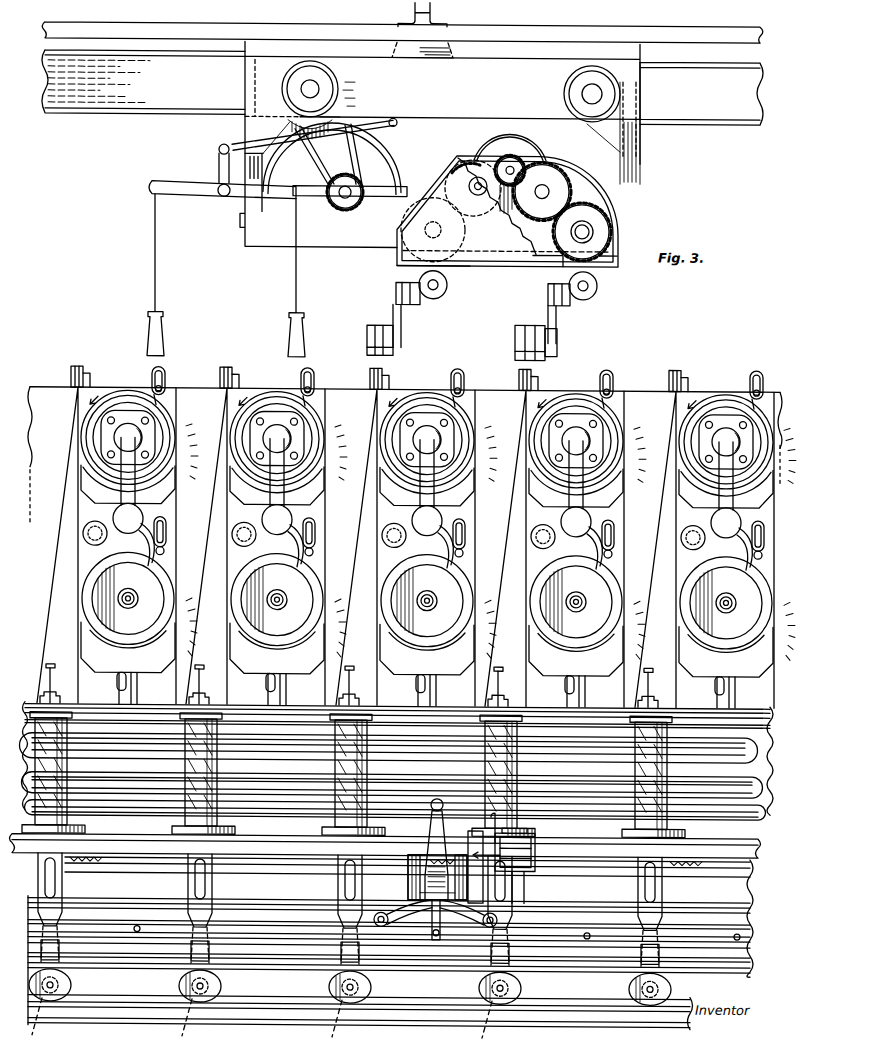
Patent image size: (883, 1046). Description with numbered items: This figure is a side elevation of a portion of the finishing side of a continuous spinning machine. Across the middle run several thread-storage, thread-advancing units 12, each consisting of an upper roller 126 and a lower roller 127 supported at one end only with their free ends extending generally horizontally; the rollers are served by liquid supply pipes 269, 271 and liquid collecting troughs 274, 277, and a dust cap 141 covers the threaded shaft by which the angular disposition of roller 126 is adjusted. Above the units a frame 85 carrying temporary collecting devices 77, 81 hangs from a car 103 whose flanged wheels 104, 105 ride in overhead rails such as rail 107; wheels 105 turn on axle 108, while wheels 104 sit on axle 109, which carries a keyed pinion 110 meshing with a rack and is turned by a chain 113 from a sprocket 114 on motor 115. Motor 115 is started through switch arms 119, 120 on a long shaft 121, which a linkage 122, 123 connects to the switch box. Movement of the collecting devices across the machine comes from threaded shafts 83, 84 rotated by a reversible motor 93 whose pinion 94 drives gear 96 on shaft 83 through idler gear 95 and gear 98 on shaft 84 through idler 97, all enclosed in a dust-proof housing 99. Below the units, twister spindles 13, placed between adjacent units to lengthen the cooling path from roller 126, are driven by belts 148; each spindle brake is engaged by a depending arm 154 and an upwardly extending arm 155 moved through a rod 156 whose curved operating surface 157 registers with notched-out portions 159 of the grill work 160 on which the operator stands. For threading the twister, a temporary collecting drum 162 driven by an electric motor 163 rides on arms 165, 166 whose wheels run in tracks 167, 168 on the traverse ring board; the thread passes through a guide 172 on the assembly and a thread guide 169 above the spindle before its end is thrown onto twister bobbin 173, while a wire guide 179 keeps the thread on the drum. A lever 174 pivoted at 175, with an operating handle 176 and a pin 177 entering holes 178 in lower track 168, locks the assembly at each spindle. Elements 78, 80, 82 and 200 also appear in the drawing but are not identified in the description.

The thread-storage, thread-advancing unit 12 is at (671, 447).
The twister spindle 13 is at (668, 706).
The temporary collecting device 77 is at (522, 320).
The bracket 78 is at (674, 368).
The roller 80 is at (597, 290).
The temporary collecting device 81 is at (372, 325).
The roller 82 is at (447, 286).
The threaded shaft 83 is at (583, 236).
The threaded shaft 84 is at (405, 233).
The frame 85 is at (392, 247).
The reversible motor 93 is at (533, 146).
The pinion 94 is at (503, 158).
The idler gear 95 is at (570, 178).
The gear 96 is at (598, 205).
The idler 97 is at (470, 165).
The gear 98 is at (440, 178).
The dust-proof housing 99 is at (500, 248).
The car 103 is at (646, 91).
The flanged wheels 104 is at (338, 87).
The flanged wheels 105 is at (566, 95).
The rail 107 is at (130, 108).
The axle 108 is at (595, 78).
The axle 109 is at (318, 82).
The pinion 110 is at (340, 40).
The chain 113 is at (312, 150).
The sprocket 114 is at (340, 206).
The motor 115 is at (378, 165).
The switch arm 119 is at (195, 187).
The switch arm 120 is at (272, 195).
The long shaft 121 is at (223, 196).
The linkage 122 is at (218, 165).
The linkage 123 is at (240, 135).
The upper roller 126 is at (613, 424).
The lower roller 127 is at (680, 618).
The dust cap 141 is at (681, 537).
The belts 148 is at (692, 864).
The depending arm 154 is at (640, 882).
The upwardly extending arm 155 is at (659, 955).
The rod 156 is at (262, 1022).
The curved operating surface 157 is at (655, 1003).
The notched-out portions 159 is at (676, 962).
The grill work 160 is at (389, 958).
The temporary collecting drum 162 is at (526, 874).
The electric motor 163 is at (407, 855).
The arm 165 is at (400, 925).
The arm 166 is at (489, 925).
The track 167 is at (307, 858).
The lower track 168 is at (389, 958).
The thread guide 169 is at (651, 672).
The guide 172 is at (510, 840).
The twister bobbin 173 is at (340, 714).
The lever 174 is at (455, 830).
The pivot 175 is at (430, 836).
The operating handle 176 is at (428, 810).
The pin 177 is at (437, 940).
The holes 178 is at (605, 945).
The wire guide 179 is at (492, 835).
The box 200 is at (536, 845).
The liquid supply pipe 269 is at (759, 374).
The liquid supply pipe 271 is at (616, 543).
The liquid collecting trough 274 is at (683, 486).
The liquid collecting trough 277 is at (752, 672).